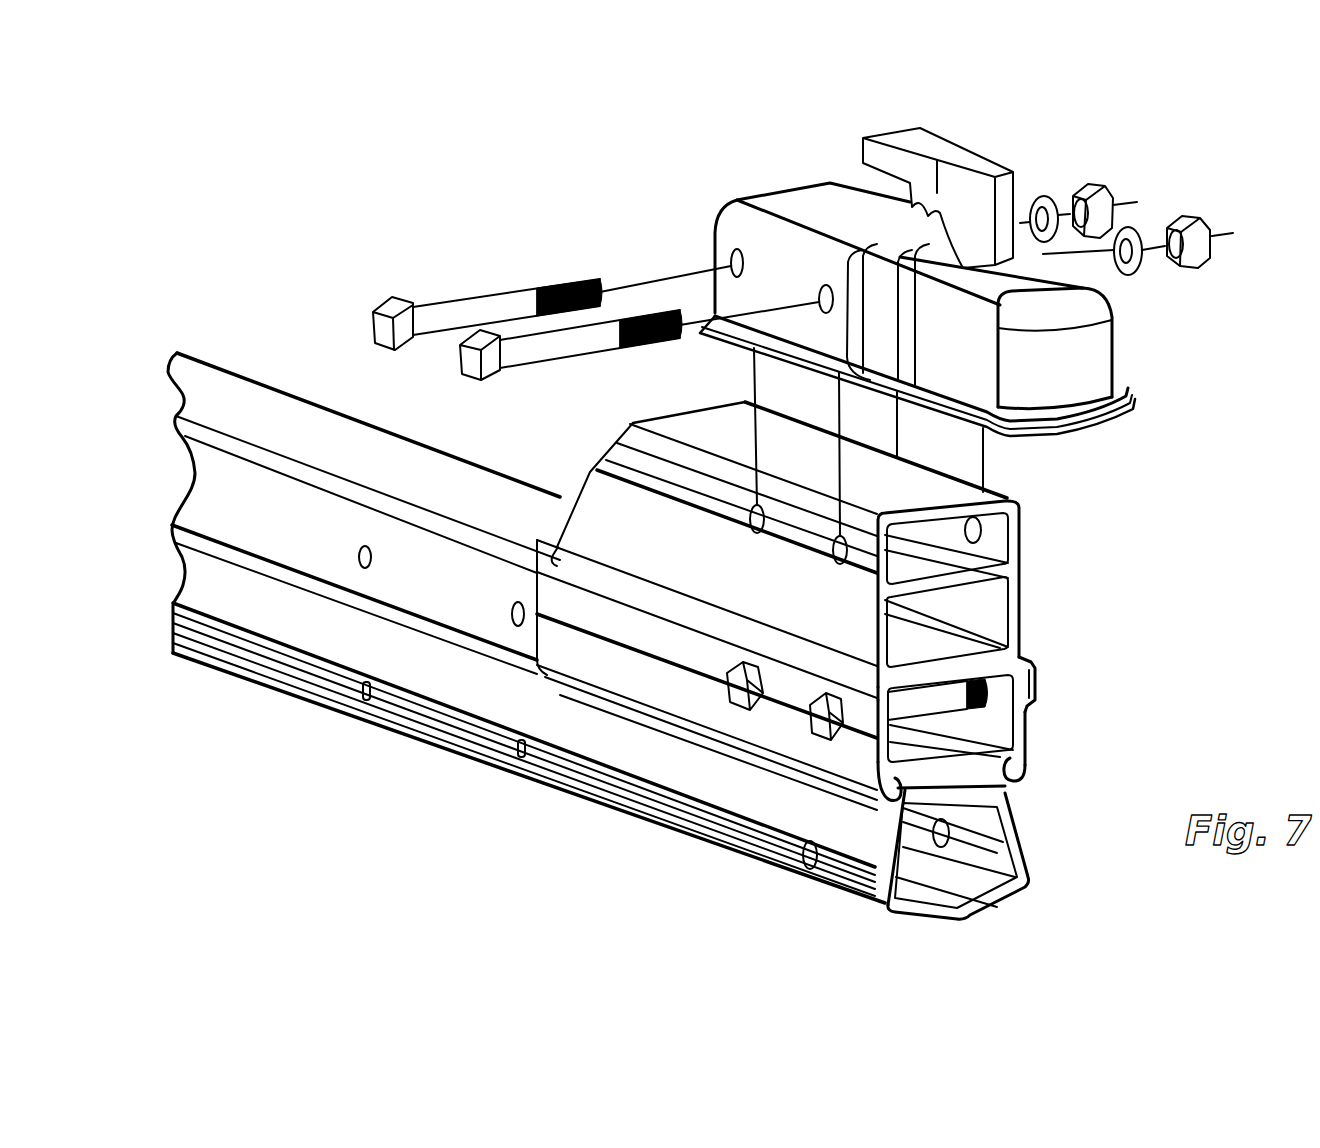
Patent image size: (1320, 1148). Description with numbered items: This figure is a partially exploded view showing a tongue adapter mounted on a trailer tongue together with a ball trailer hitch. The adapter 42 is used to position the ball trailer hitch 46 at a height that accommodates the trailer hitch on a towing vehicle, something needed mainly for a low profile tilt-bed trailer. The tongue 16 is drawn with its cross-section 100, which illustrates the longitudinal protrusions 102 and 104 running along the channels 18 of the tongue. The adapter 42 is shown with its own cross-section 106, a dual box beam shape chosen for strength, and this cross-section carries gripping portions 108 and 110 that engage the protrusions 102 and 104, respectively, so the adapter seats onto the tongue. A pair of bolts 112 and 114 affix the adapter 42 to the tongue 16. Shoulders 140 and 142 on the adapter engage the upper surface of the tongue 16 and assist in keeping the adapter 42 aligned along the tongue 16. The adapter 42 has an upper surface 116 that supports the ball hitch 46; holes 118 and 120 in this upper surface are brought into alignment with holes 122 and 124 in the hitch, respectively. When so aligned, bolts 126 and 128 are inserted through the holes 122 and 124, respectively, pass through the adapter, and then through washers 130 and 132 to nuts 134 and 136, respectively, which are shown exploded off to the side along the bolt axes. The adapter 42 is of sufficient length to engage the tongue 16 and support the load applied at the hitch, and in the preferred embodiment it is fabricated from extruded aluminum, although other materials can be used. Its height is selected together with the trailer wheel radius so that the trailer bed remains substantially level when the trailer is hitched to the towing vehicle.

The tongue 16 is at (396, 725).
The channels 18 is at (597, 718).
The adapter 42 is at (1020, 600).
The ball trailer hitch 46 is at (1103, 360).
The cross-section 100 is at (1025, 882).
The longitudinal protrusion 102 is at (1030, 742).
The longitudinal protrusion 104 is at (806, 858).
The cross-section 106 is at (1030, 655).
The gripping portion 108 is at (1032, 778).
The gripping portion 110 is at (900, 800).
The bolt 112 is at (745, 712).
The bolt 114 is at (833, 720).
The upper surface 116 is at (688, 428).
The hole 118 is at (752, 507).
The hole 120 is at (846, 545).
The hole 122 is at (722, 262).
The hole 124 is at (824, 290).
The bolt 126 is at (372, 322).
The bolt 128 is at (463, 368).
The washer 130 is at (1045, 196).
The washer 132 is at (1140, 240).
The nut 134 is at (1105, 190).
The nut 136 is at (1202, 233).
The shoulder 140 is at (553, 562).
The shoulder 142 is at (1036, 668).